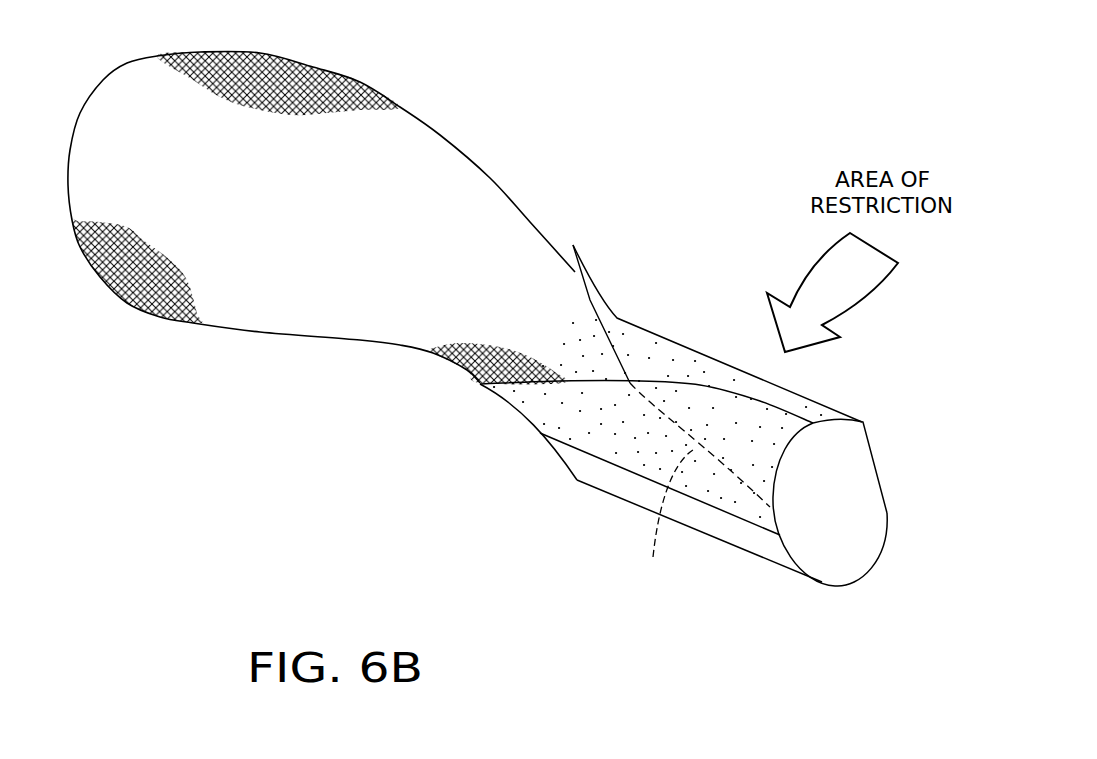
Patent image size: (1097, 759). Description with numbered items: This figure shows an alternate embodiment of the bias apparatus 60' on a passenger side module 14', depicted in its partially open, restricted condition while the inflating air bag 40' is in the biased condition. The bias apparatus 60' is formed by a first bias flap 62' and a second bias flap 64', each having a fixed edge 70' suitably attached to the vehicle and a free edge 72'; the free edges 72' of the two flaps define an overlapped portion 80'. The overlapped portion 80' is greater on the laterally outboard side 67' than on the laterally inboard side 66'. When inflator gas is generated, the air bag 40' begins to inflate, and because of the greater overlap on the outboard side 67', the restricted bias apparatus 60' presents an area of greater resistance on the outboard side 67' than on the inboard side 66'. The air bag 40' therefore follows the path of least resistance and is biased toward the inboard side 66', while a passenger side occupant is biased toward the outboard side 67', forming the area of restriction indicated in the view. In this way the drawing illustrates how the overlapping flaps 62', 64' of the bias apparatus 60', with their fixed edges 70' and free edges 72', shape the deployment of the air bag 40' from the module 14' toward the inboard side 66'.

The air bag 40' is at (321, 217).
The passenger side module 14' is at (717, 312).
The first bias flap 62' is at (650, 335).
The free edges 72' is at (742, 412).
The bias apparatus 60' is at (726, 441).
The fixed edges 70' is at (761, 497).
The overlapped portion 80' is at (854, 466).
The laterally outboard side 67' is at (861, 548).
The second bias flap 64' is at (638, 468).
The laterally inboard side 66' is at (506, 432).